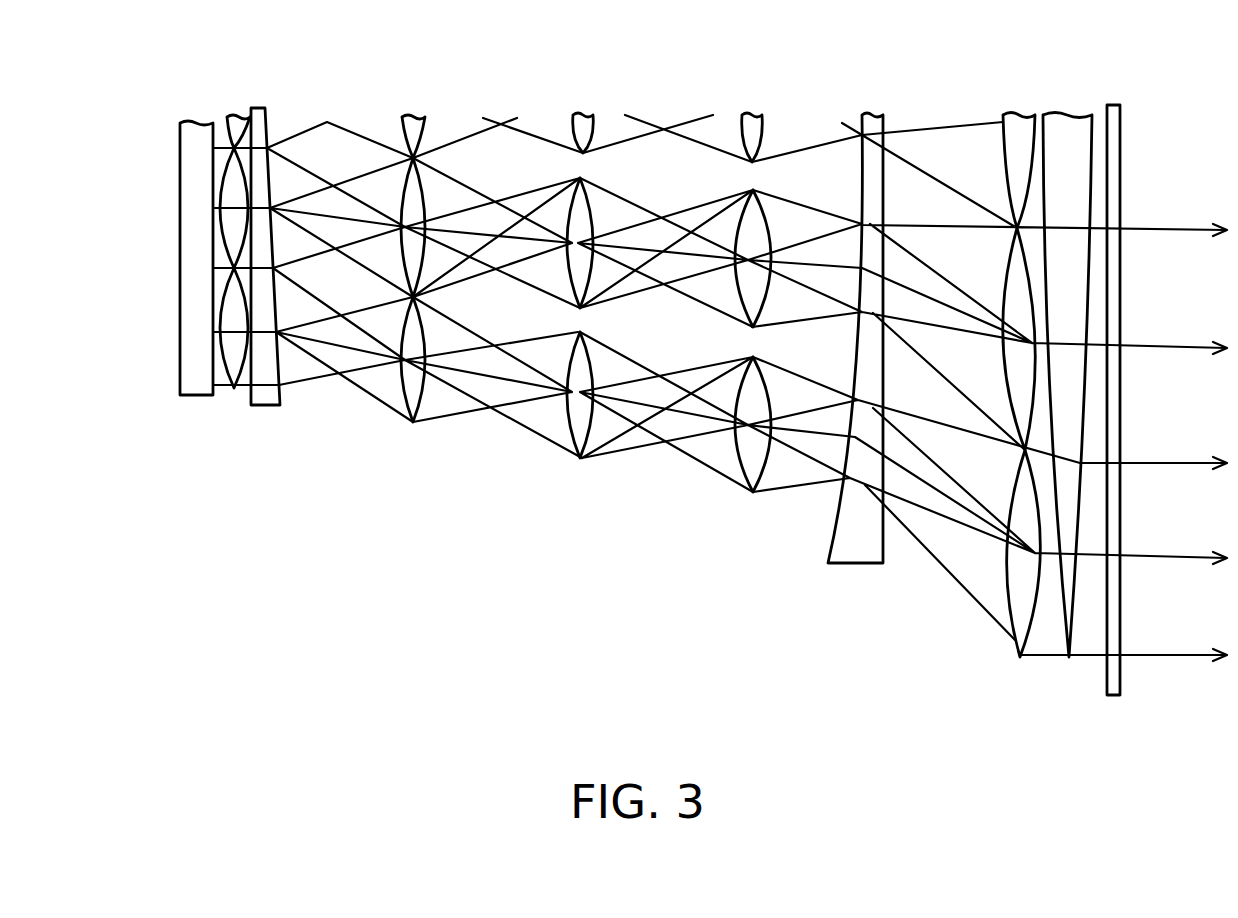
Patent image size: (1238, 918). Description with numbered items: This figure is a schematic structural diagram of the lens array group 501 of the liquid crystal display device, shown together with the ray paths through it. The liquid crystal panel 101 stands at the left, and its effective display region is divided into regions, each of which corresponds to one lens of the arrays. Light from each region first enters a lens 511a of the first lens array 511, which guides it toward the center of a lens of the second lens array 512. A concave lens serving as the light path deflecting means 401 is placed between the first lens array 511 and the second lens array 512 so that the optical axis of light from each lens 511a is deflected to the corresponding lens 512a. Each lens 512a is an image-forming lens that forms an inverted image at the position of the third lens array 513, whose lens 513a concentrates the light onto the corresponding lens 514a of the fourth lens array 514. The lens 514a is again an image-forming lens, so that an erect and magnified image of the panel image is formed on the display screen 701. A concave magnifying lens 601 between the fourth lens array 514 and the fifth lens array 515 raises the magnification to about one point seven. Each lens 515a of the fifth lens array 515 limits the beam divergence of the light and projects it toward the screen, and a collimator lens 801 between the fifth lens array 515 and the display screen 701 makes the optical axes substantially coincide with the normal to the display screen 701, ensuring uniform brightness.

The liquid crystal panel 101 is at (182, 393).
The light path deflecting means 401 is at (267, 418).
The lens array group 501 is at (483, 358).
The first lens array 511 is at (219, 243).
The lens of the first lens array 511a is at (232, 388).
The second lens array 512 is at (396, 267).
The lens of the second lens array 512a is at (404, 410).
The third lens array 513 is at (570, 286).
The lens of the third lens array 513a is at (580, 448).
The fourth lens array 514 is at (731, 303).
The lens of the fourth lens array 514a is at (725, 473).
The fifth lens array 515 is at (978, 380).
The lens of the fifth lens array 515a is at (1010, 640).
The magnifying lens 601 is at (860, 550).
The display screen 701 is at (1113, 692).
The collimator lens 801 is at (1068, 612).